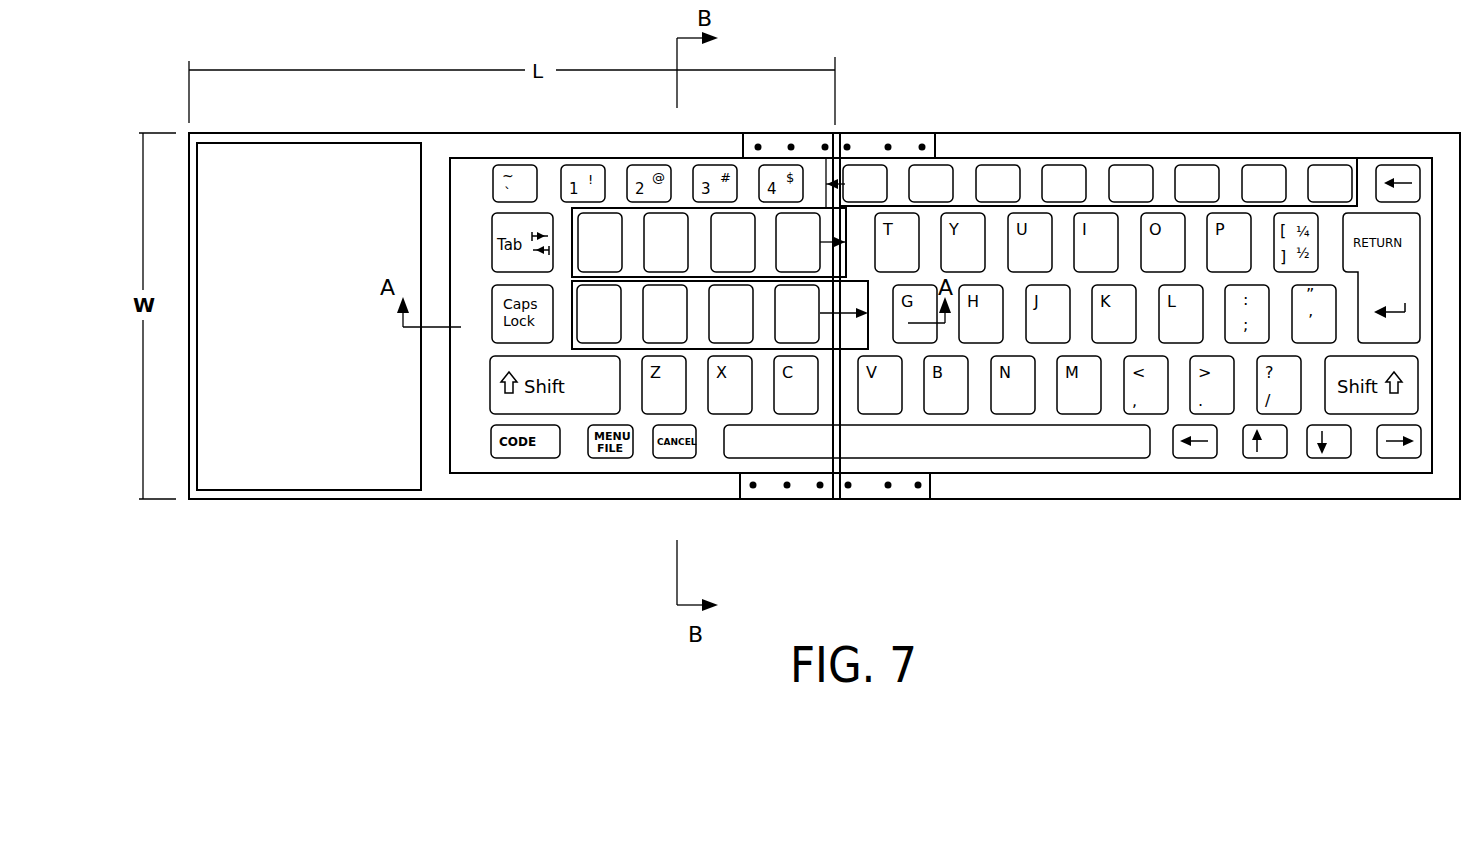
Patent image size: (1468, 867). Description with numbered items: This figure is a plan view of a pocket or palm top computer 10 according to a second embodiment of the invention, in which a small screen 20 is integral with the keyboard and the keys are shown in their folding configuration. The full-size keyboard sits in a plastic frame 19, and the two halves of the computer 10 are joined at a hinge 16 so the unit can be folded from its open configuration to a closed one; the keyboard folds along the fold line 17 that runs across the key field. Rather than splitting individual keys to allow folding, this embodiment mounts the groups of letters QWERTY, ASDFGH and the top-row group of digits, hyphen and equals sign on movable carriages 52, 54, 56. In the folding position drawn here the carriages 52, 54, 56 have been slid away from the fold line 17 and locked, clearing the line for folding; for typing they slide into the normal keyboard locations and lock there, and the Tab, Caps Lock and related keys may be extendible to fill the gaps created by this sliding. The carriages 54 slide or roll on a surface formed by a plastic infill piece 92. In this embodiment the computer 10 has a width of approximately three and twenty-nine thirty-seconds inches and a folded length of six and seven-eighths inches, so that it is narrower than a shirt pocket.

The computer 10 is at (511, 524).
The hinge 16 is at (876, 135).
The fold line 17 is at (835, 415).
The plastic frame 19 is at (575, 490).
The screen 20 is at (318, 290).
The carriage 52 is at (632, 233).
The carriage 54 is at (698, 297).
The carriage 56 is at (960, 186).
The plastic infill piece 92 is at (862, 330).